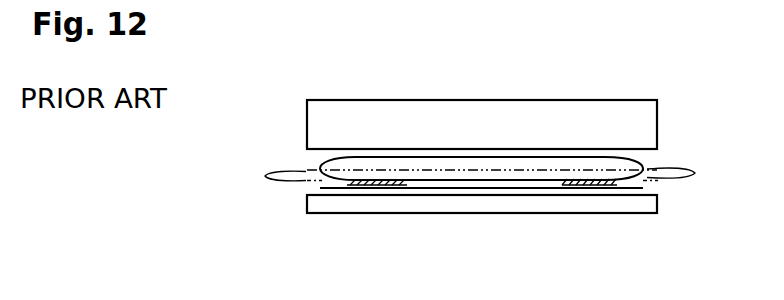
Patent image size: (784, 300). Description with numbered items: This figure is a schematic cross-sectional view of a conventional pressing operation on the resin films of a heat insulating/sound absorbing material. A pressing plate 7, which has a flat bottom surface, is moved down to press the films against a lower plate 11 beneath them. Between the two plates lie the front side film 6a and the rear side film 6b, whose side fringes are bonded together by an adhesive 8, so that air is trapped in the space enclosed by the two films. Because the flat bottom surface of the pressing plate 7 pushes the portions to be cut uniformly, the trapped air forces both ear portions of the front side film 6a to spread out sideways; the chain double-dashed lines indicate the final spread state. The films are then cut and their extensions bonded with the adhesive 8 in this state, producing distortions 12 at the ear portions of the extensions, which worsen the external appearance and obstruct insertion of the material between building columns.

The pressing plate 7 is at (413, 117).
The lower holding member 11 is at (413, 205).
The front side film 6a is at (560, 156).
The rear side film 6b is at (507, 189).
The adhesive 8 is at (581, 184).
The distortions 12 is at (694, 175).